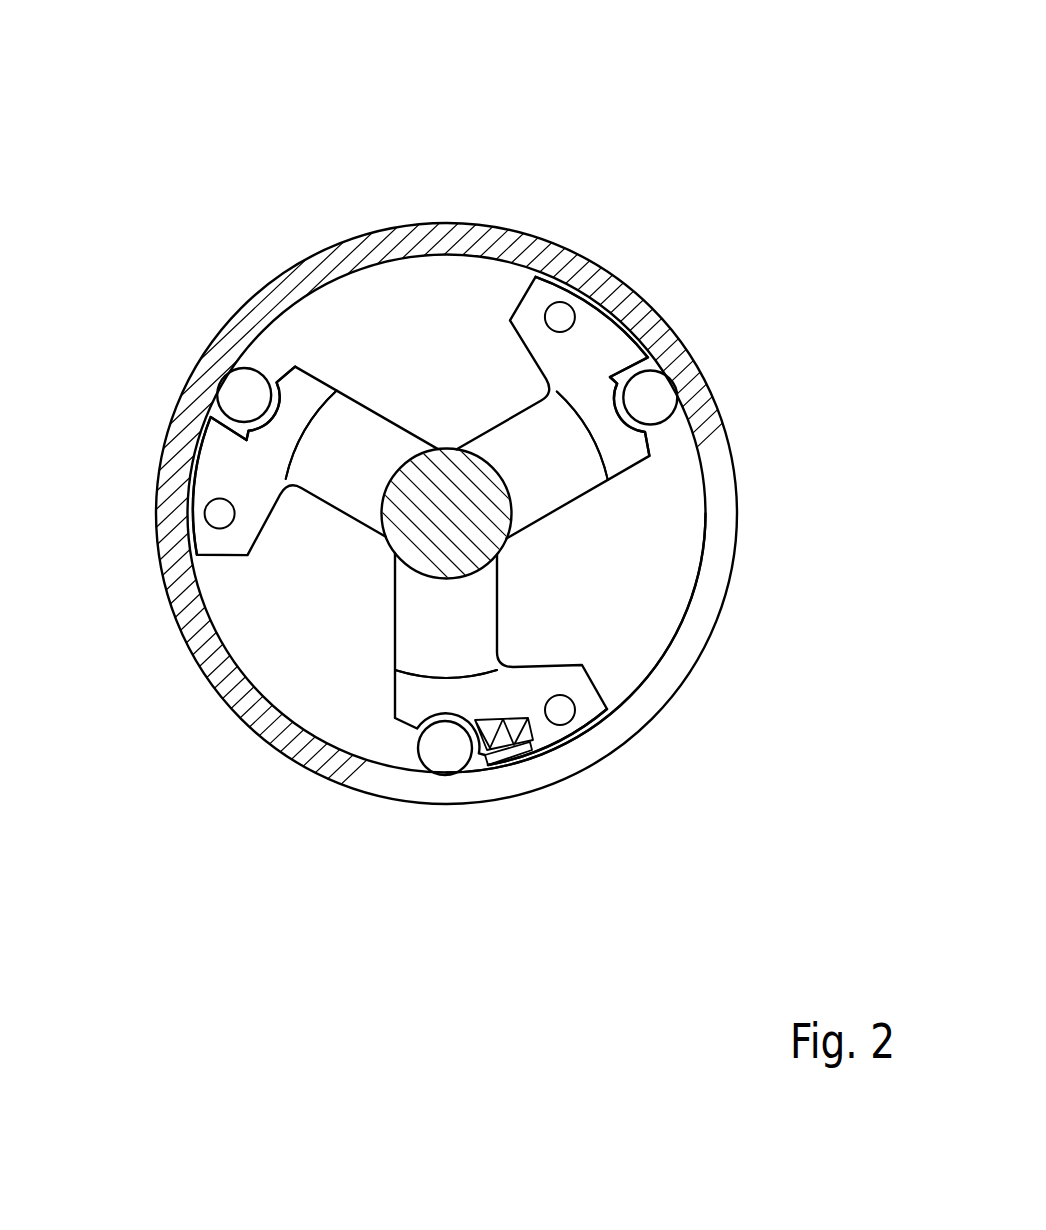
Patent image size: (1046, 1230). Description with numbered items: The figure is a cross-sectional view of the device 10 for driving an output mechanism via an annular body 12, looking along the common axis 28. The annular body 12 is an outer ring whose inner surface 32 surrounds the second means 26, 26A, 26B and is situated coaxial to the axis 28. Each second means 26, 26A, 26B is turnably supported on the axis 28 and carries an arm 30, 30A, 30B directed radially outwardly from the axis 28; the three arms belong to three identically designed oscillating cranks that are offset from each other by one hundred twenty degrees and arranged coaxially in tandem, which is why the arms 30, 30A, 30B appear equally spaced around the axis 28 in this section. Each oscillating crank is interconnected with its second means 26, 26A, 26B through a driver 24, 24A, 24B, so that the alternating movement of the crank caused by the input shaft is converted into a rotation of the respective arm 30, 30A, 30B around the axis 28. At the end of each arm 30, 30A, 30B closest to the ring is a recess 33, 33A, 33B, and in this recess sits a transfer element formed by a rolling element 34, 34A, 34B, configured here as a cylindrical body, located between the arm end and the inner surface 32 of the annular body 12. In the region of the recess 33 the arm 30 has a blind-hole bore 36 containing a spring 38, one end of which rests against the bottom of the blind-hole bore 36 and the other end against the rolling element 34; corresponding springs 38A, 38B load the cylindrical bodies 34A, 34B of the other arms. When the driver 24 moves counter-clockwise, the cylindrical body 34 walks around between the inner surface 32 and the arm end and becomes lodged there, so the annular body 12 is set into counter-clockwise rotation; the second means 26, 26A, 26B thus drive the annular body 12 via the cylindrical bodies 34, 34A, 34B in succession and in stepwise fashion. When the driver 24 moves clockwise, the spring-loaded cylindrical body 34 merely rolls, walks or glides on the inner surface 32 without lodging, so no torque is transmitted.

The device 10 is at (152, 143).
The annular body 12 is at (390, 236).
The driver 24 is at (561, 709).
The driver 24A is at (220, 517).
The driver 24B is at (561, 316).
The second means 26 is at (396, 632).
The second means 26A is at (373, 406).
The second means 26B is at (494, 431).
The axis 28 is at (475, 511).
The arm 30 is at (420, 643).
The arm 30A is at (337, 452).
The arm 30B is at (560, 463).
The inner surface 32 is at (698, 556).
The recess 33 is at (480, 766).
The recess 33A is at (278, 377).
The recess 33B is at (646, 362).
The rolling element 34 is at (443, 748).
The cylindrical body 34A is at (240, 390).
The cylindrical body 34B is at (650, 396).
The blind-hole bore 36 is at (512, 750).
The spring 38 is at (548, 768).
The spring 38A is at (232, 426).
The spring 38B is at (628, 365).